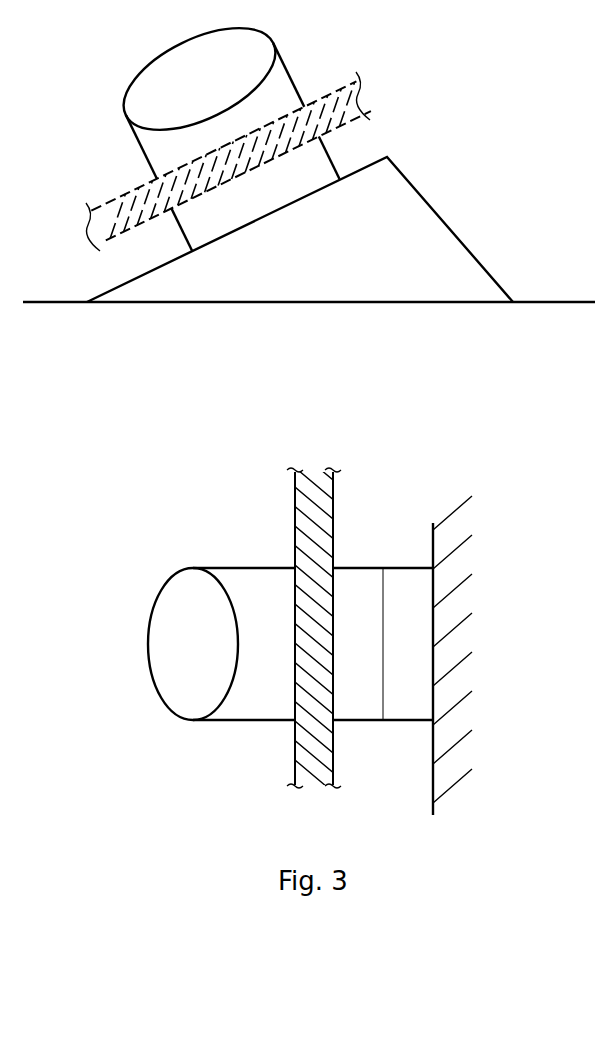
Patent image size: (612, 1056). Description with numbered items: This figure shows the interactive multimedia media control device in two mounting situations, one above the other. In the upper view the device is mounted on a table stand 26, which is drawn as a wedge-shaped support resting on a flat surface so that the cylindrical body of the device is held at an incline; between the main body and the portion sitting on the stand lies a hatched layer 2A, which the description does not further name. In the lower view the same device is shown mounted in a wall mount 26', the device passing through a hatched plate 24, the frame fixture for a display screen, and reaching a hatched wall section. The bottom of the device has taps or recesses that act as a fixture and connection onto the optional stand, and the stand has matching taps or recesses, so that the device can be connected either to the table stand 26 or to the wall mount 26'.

The hatched coupling layer 2A is at (353, 100).
The fourth object 24 is at (317, 503).
The table stand 26 is at (301, 229).
The wall mount 26' is at (426, 655).